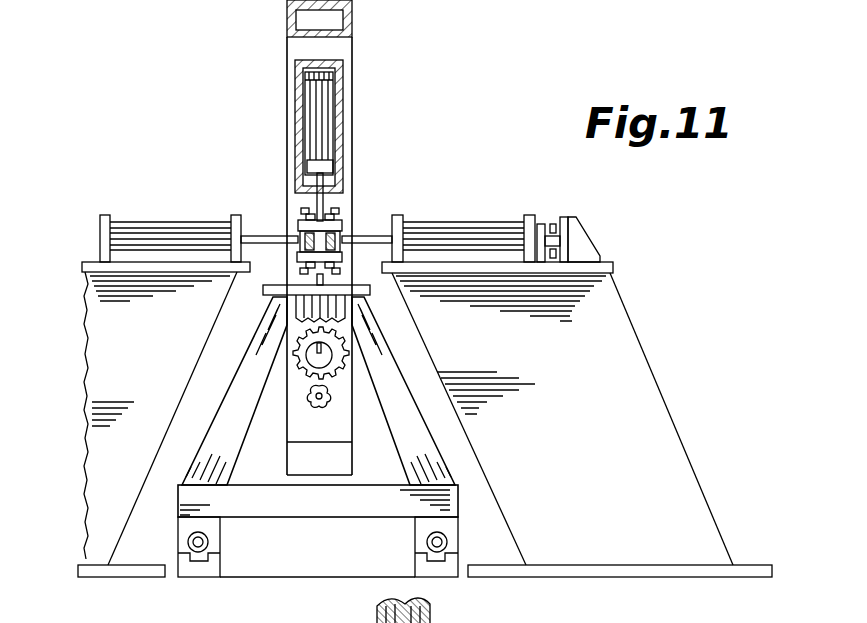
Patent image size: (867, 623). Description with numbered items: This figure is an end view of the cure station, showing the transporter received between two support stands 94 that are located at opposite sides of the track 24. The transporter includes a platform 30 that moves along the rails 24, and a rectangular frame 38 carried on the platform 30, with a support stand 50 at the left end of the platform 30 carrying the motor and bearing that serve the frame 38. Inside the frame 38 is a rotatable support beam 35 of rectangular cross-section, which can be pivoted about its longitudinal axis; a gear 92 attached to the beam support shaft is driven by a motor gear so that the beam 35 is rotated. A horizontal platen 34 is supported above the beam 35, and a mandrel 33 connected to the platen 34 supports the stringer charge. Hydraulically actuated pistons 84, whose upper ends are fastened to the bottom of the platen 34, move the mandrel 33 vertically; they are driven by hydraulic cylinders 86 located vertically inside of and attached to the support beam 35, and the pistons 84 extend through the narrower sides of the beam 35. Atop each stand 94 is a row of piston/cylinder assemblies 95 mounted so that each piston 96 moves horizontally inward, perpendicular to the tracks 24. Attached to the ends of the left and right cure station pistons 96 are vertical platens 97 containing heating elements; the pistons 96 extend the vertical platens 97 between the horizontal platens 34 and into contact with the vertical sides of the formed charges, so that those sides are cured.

The rails 24 is at (198, 543).
The platform 30 is at (330, 505).
The mandrels 33 is at (336, 220).
The horizontal platen 34 is at (342, 228).
The rotatable support beam 35 is at (343, 100).
The rectangular frame 38 is at (356, 48).
The support stand 50 is at (234, 432).
The hydraulically actuated pistons 84 is at (322, 212).
The hydraulic cylinders 86 is at (316, 122).
The gear 92 is at (158, 222).
The support stands 94 is at (650, 372).
The piston/cylinder assemblies 95 is at (493, 222).
The cure station pistons 96 is at (258, 235).
The vertical platens 97 is at (302, 244).